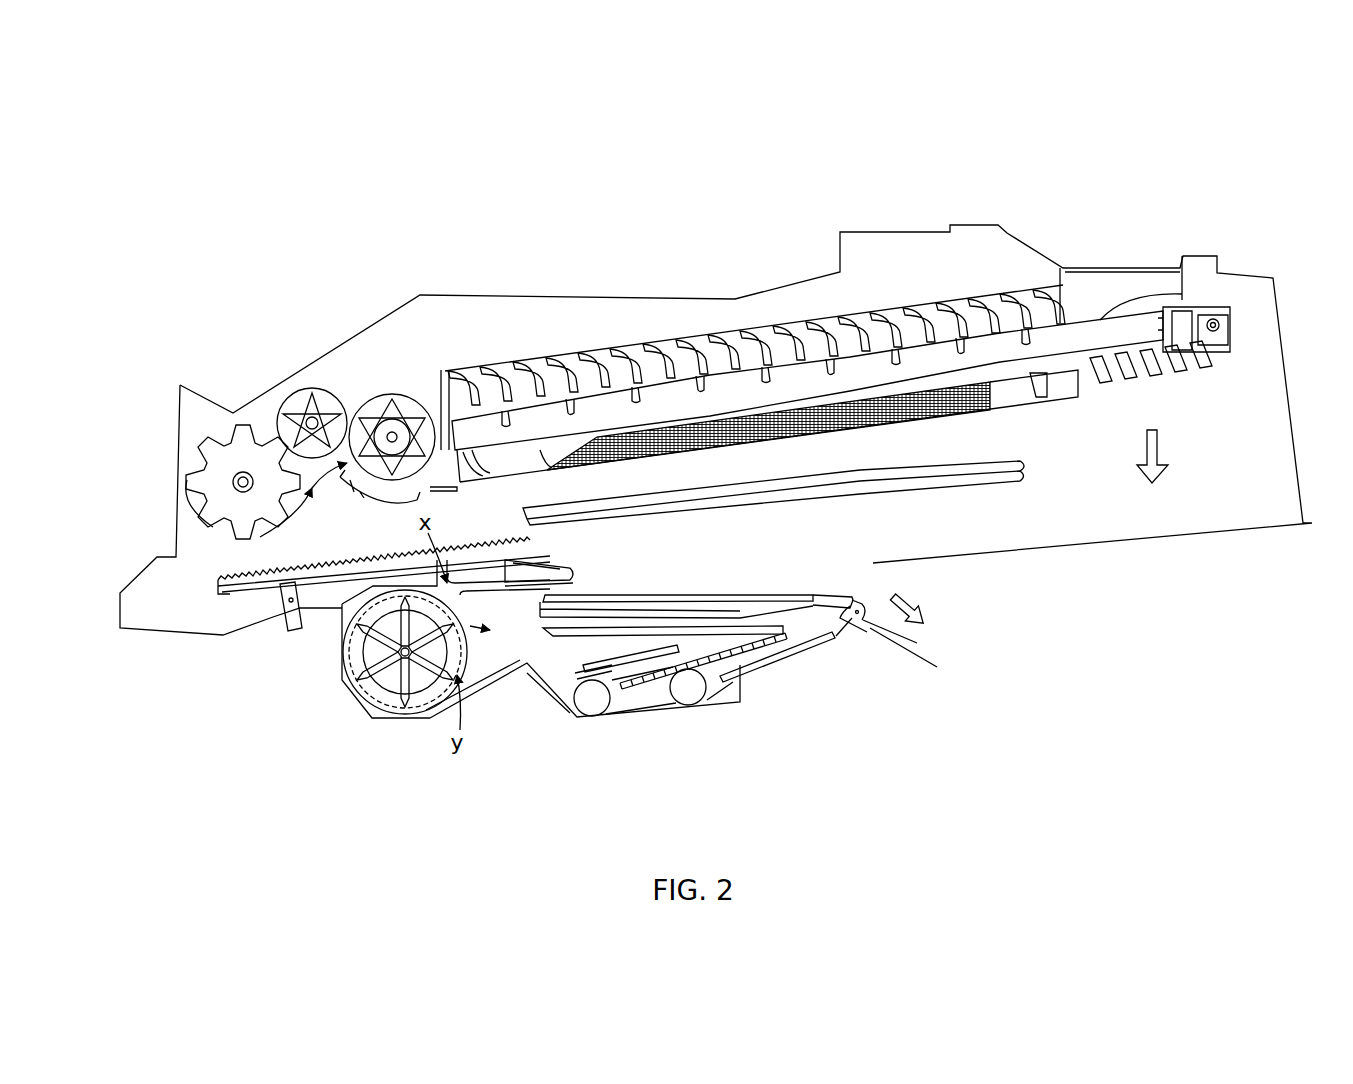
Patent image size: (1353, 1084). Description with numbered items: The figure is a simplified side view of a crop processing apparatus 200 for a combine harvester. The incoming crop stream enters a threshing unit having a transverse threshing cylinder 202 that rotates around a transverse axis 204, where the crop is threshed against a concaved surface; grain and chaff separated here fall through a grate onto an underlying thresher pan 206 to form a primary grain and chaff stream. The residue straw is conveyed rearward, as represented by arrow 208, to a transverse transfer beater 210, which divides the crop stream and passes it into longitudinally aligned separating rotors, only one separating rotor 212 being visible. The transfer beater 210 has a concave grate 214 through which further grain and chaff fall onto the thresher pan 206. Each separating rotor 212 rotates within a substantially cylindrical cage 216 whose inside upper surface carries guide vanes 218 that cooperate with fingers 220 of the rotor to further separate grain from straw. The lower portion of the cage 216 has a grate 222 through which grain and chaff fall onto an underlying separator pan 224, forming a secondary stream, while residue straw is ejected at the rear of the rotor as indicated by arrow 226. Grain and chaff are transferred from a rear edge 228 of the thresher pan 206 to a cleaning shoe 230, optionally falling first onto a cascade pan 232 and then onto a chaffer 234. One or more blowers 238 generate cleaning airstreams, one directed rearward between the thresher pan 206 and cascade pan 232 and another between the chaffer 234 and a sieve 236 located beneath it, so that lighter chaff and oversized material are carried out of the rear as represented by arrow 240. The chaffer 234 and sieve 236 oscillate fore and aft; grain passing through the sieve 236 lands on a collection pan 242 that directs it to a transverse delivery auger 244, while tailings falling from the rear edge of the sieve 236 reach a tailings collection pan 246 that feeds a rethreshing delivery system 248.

The crop processing apparatus 200 is at (340, 202).
The threshing cylinder 202 is at (200, 463).
The transverse axis 204 is at (237, 473).
The thresher pan 206 is at (327, 570).
The arrow 208 is at (300, 507).
The transfer beater 210 is at (375, 407).
The separating rotor 212 is at (543, 427).
The concave grate 214 is at (368, 493).
The cage 216 is at (670, 338).
The guide vanes 218 is at (777, 327).
The fingers 220 is at (953, 300).
The grate 222 is at (973, 410).
The separator pan 224 is at (887, 487).
The arrow 226 is at (1160, 445).
The rear edge 228 is at (523, 553).
The cleaning shoe 230 is at (508, 720).
The cascade pan 232 is at (572, 573).
The chaffer 234 is at (813, 595).
The sieve 236 is at (735, 627).
The blower 238 is at (390, 680).
The arrow 240 is at (888, 592).
The collection pan 242 is at (763, 643).
The delivery auger 244 is at (592, 708).
The tailings collection pan 246 is at (817, 643).
The rethreshing delivery system 248 is at (688, 697).